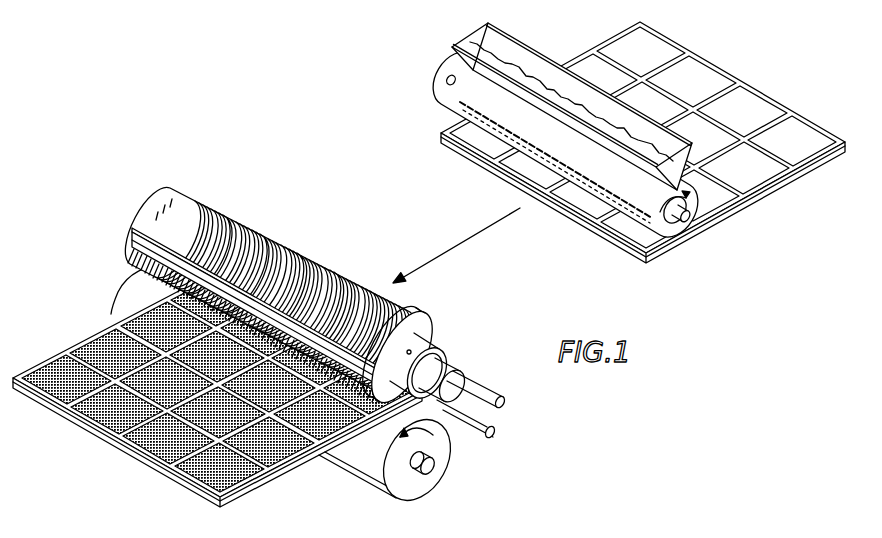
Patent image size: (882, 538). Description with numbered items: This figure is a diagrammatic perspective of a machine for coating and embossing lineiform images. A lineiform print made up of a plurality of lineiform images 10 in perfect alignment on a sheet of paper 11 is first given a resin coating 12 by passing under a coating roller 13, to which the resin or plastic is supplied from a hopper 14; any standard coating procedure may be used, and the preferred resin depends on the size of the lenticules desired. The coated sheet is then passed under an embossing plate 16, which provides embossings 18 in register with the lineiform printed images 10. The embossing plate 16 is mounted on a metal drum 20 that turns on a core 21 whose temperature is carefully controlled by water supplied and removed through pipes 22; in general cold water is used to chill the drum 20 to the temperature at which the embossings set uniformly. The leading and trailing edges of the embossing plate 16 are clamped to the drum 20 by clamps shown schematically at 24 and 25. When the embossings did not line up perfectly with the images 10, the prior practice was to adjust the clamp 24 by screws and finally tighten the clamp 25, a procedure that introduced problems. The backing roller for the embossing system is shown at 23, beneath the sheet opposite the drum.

The lineiform images 10 is at (732, 73).
The sheet of paper 11 is at (780, 188).
The resin coating 12 is at (462, 130).
The coating roller 13 is at (672, 229).
The hopper 14 is at (462, 34).
The embossing plate 16 is at (222, 207).
The embossings 18 is at (230, 478).
The metal drum 20 is at (433, 338).
The core 21 is at (448, 355).
The pipes 22 is at (494, 434).
The backing roller 23 is at (414, 487).
The clamp 24 is at (128, 247).
The clamp 25 is at (126, 226).